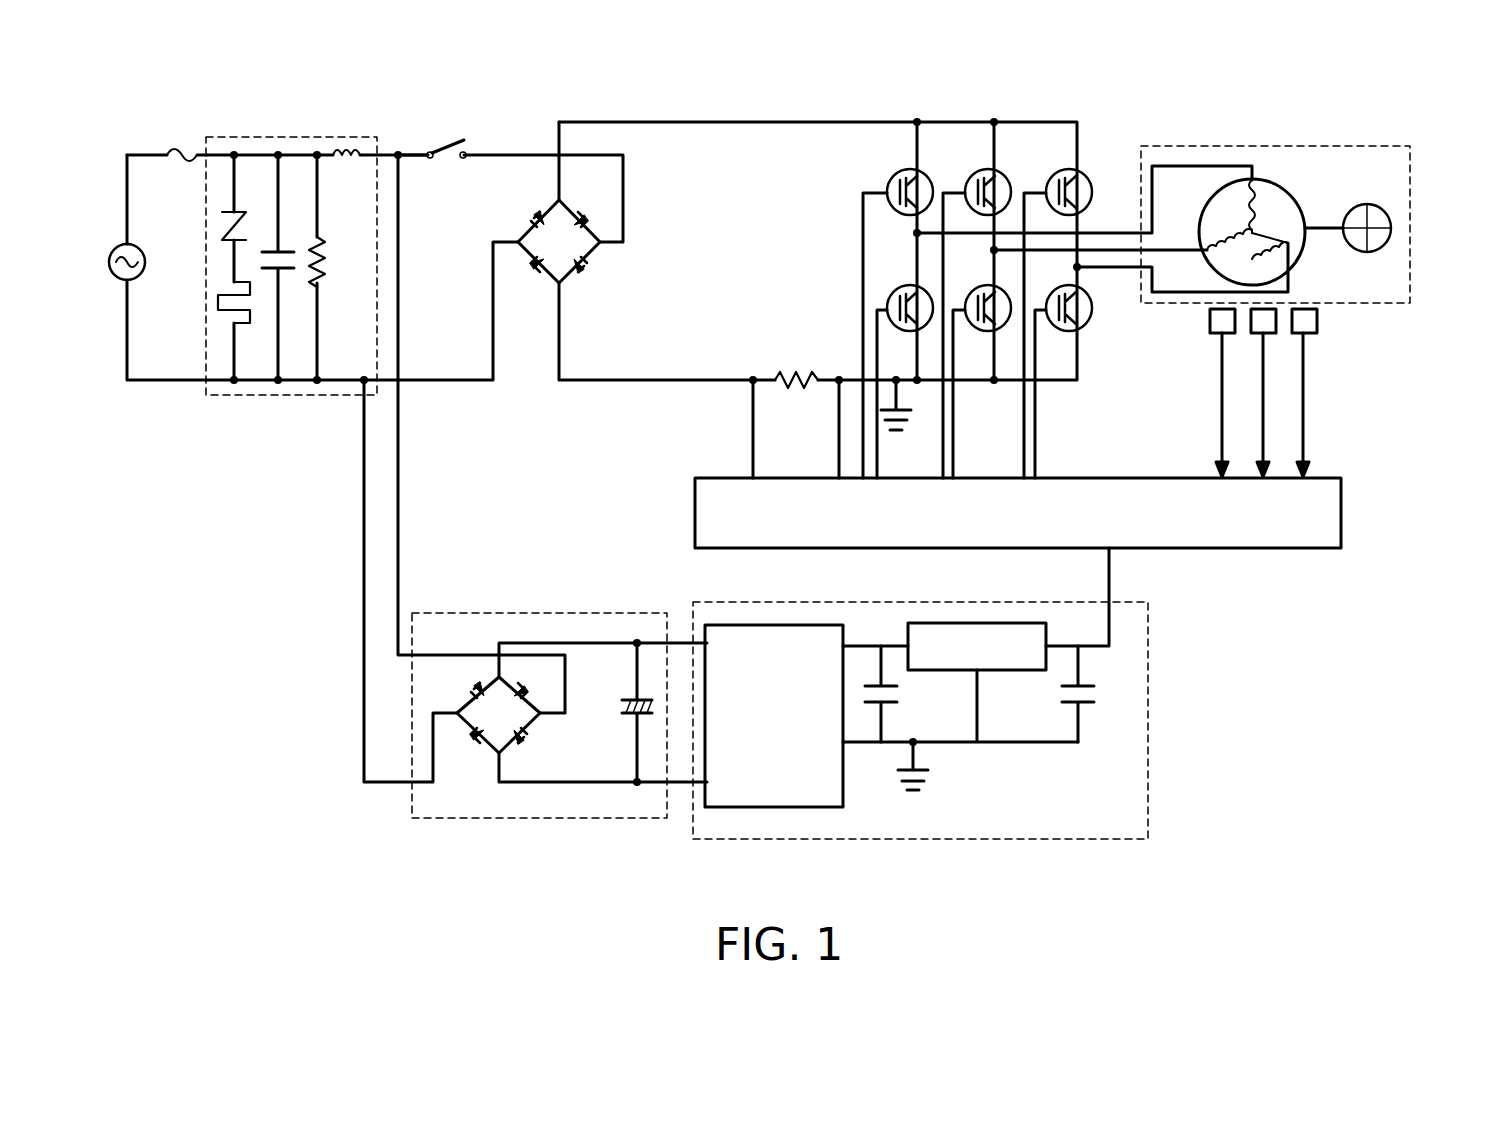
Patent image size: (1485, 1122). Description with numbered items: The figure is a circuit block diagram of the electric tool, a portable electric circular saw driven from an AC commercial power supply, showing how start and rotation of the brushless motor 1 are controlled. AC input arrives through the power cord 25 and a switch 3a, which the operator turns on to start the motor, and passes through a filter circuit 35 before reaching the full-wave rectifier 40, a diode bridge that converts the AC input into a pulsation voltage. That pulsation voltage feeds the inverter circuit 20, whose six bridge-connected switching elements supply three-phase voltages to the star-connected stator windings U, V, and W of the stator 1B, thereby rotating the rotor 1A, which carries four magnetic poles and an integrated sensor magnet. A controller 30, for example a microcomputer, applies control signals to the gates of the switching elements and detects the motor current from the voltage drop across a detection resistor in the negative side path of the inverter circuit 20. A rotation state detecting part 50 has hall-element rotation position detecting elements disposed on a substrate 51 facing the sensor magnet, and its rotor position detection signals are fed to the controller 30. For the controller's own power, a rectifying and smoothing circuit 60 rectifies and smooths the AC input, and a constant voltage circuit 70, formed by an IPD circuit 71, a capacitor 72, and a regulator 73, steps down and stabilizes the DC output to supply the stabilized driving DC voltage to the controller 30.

The brushless motor 1 is at (1190, 170).
The rotor 1A is at (1392, 222).
The stator 1B is at (1293, 195).
The switch 3a is at (440, 142).
The inverter circuit 20 is at (876, 157).
The power cord 25 is at (127, 152).
The controller 30 is at (1243, 550).
The filter circuit 35 is at (270, 134).
The full-wave rectifier 40 is at (598, 262).
The rotation state detecting part 50 is at (1293, 393).
The substrate 51 is at (1258, 335).
The rectifying and smoothing circuit 60 is at (506, 613).
The constant voltage circuit 70 is at (967, 724).
The IPD circuit 71 is at (778, 807).
The capacitor 72 is at (898, 695).
The regulator 73 is at (938, 630).